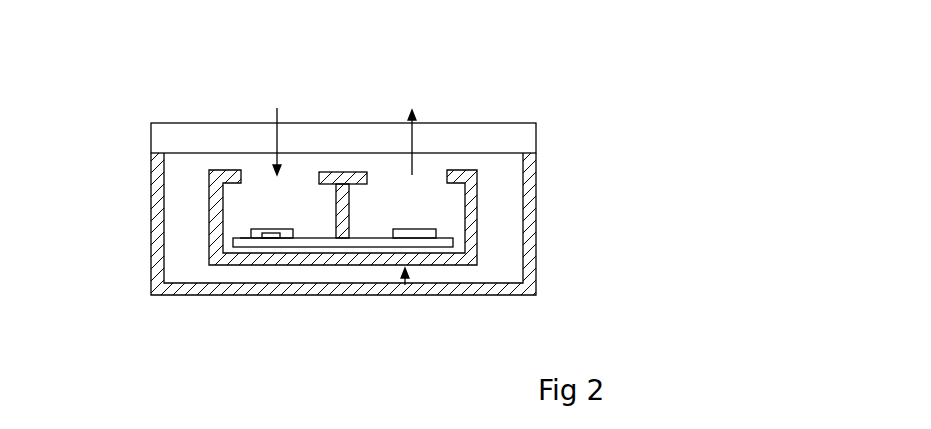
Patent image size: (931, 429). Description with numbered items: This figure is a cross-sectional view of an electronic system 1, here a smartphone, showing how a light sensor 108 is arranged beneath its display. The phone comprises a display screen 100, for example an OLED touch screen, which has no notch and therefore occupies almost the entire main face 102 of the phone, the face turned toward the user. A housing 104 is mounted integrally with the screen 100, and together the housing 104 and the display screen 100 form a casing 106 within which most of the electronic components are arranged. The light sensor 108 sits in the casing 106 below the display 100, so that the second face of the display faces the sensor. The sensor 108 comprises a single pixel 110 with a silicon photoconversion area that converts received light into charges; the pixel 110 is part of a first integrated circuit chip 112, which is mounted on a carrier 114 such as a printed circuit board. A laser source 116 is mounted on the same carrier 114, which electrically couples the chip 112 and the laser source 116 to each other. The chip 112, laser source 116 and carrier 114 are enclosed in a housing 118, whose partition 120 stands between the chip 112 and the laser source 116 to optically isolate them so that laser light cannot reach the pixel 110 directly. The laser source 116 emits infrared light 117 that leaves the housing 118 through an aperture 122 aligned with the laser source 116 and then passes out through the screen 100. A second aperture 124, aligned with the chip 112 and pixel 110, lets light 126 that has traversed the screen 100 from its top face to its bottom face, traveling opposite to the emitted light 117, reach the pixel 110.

The electronic system 1 is at (98, 91).
The display screen 100 is at (394, 170).
The main face 102 is at (498, 123).
The housing 104 is at (537, 213).
The casing 106 is at (416, 208).
The light sensor 108 is at (405, 285).
The pixel 110 is at (277, 229).
The first integrated circuit chip 112 is at (232, 232).
The carrier 114 is at (303, 240).
The laser source 116 is at (410, 229).
The emitted light 117 is at (410, 124).
The housing 118 is at (470, 261).
The partition 120 is at (342, 238).
The aperture 122 is at (449, 181).
The aperture 124 is at (241, 183).
The light 126 is at (277, 108).